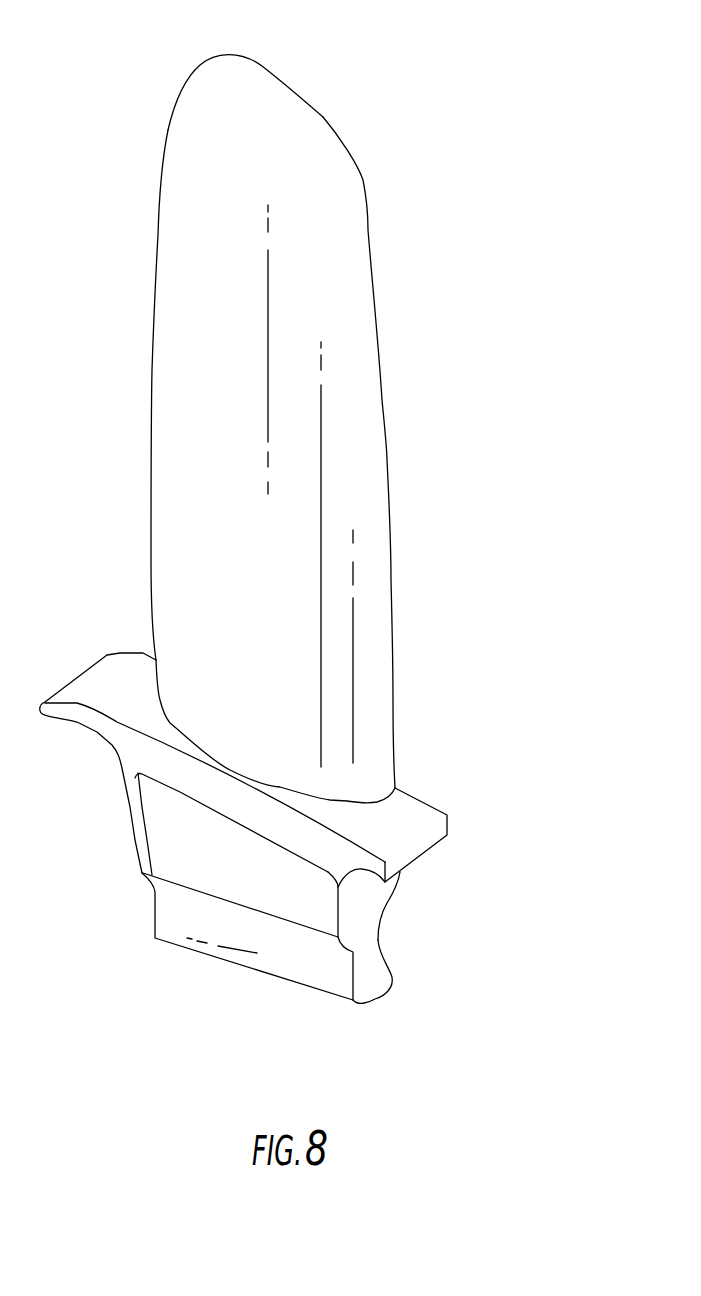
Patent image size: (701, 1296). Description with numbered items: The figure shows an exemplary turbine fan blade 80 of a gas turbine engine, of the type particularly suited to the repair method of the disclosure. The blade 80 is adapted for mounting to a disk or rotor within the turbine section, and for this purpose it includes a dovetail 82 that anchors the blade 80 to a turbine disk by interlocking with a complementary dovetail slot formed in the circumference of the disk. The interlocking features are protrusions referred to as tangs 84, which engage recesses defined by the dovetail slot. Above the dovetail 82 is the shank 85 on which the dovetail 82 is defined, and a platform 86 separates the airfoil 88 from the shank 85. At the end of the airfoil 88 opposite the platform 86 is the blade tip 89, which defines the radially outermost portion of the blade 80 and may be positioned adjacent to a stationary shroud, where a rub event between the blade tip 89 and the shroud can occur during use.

The turbine fan blade 80 is at (478, 145).
The dovetail 82 is at (372, 980).
The tangs 84 is at (257, 953).
The shank 85 is at (172, 825).
The platform 86 is at (412, 812).
The airfoil 88 is at (360, 437).
The blade tip 89 is at (300, 64).